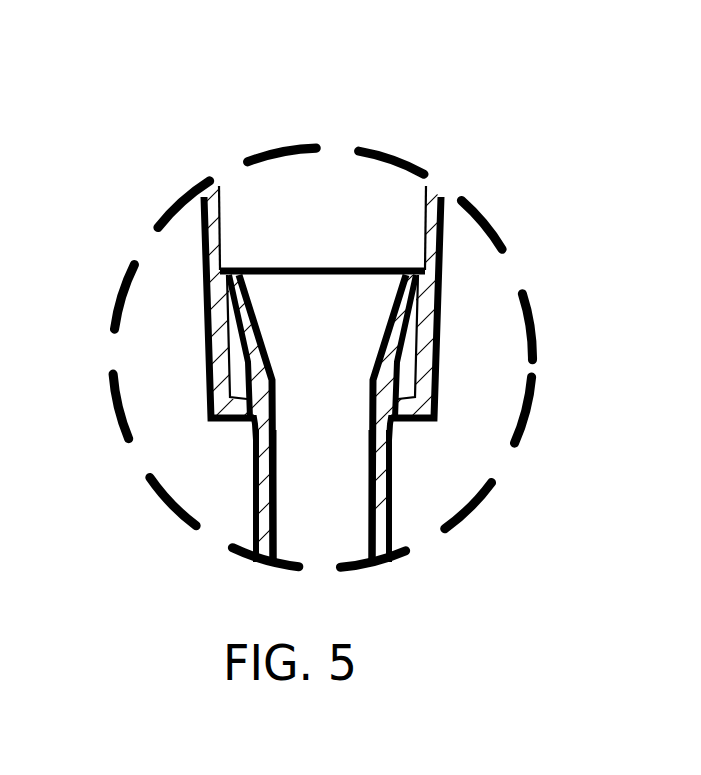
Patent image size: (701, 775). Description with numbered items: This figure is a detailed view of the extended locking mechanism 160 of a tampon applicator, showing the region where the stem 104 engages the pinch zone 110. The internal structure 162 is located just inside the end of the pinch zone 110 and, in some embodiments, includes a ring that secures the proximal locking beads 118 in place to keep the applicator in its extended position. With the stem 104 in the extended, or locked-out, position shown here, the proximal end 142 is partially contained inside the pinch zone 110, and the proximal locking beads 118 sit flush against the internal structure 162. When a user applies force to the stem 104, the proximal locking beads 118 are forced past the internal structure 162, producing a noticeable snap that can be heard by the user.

The nozzle assembly 160 is at (299, 66).
The proximal end 142 is at (220, 270).
The pinch zone 110 is at (440, 257).
The internal structure 162 is at (233, 355).
The proximal locking beads 118 is at (248, 428).
The stem 104 is at (387, 497).